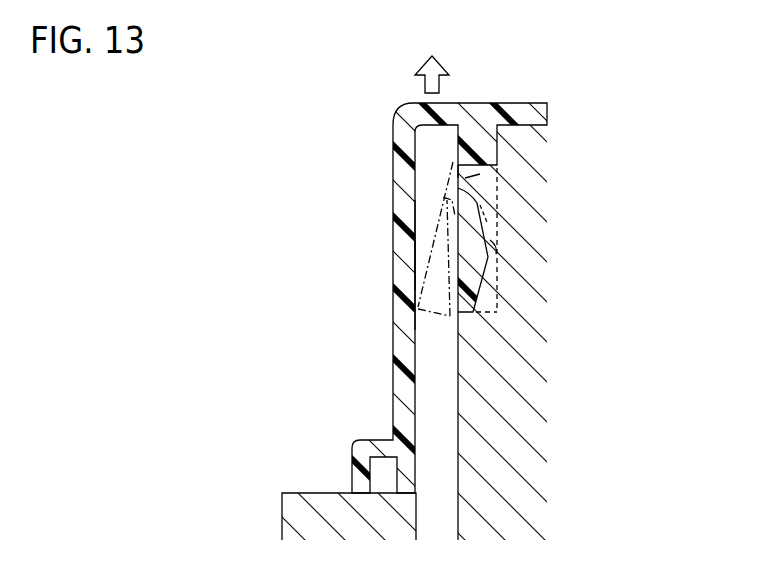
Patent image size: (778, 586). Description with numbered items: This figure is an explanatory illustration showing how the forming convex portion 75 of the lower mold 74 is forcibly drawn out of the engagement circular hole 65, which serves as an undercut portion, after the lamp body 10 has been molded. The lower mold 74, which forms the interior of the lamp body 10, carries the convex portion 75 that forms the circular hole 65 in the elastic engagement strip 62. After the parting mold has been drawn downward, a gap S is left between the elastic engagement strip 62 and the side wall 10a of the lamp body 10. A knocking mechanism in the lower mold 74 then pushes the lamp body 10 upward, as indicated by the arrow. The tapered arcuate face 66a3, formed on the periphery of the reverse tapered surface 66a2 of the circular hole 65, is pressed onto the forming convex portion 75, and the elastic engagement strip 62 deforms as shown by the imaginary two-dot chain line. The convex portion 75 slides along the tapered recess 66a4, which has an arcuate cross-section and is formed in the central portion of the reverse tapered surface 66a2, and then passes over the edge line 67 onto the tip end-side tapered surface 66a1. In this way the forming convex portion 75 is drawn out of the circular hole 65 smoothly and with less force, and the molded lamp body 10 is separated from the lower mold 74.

The lamp body 10 is at (390, 352).
The side wall of the lamp body 10a is at (409, 264).
The engagement circular hole 65 is at (462, 180).
The forming convex portion 75 is at (475, 175).
The lower mold 74 is at (525, 433).
The edge line 67 is at (488, 257).
The elastic engagement strip 62 is at (499, 300).
The tip end-side tapered surface 66a1 is at (480, 284).
The circular hole-side tapered surface 66a2 is at (482, 232).
The tapered arcuate face 66a3 is at (475, 175).
The tapered recess 66a4 is at (477, 204).
The gap S is at (450, 437).